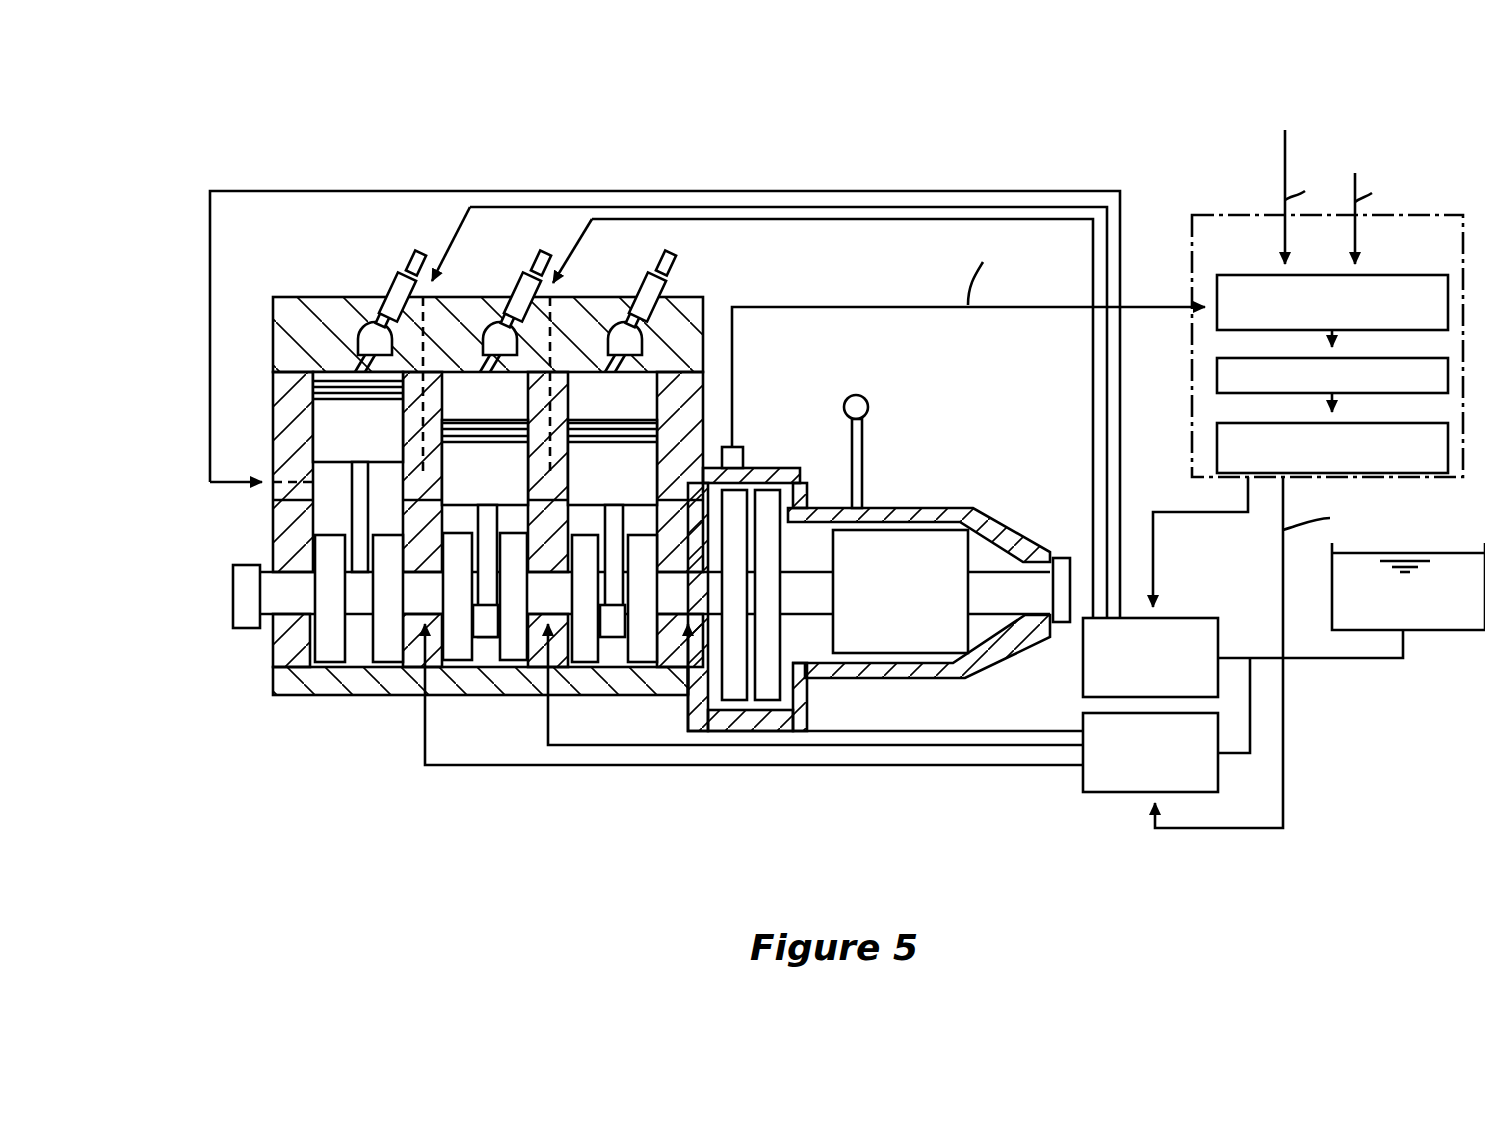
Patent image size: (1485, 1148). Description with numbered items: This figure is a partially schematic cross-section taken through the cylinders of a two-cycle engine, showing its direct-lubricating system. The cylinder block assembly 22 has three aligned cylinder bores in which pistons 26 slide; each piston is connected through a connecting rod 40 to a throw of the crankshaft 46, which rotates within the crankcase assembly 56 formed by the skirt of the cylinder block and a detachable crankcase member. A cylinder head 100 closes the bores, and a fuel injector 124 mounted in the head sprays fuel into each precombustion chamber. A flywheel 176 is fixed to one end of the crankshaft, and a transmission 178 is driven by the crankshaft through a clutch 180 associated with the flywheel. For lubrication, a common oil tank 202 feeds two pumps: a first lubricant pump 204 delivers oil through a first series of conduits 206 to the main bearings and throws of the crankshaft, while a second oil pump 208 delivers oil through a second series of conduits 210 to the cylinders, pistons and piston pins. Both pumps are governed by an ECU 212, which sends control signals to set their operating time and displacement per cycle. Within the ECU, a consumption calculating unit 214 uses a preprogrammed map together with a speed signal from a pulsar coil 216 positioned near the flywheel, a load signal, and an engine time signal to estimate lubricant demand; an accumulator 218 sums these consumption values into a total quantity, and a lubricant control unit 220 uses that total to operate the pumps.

The cylinder block assembly 22 is at (283, 420).
The pistons 26 is at (283, 452).
The connecting rods 40 is at (360, 557).
The crankshaft 46 is at (287, 602).
The crankcase assembly 56 is at (285, 538).
The cylinder head 100 is at (283, 347).
The fuel injector 124 is at (642, 285).
The flywheel 176 is at (752, 495).
The transmission 178 is at (893, 633).
The clutch 180 is at (808, 505).
The oil tank 202 is at (1420, 632).
The first lubricant pump 204 is at (1083, 780).
The first series of conduits 206 is at (862, 733).
The second oil pump 208 is at (1083, 668).
The second series of conduits 210 is at (1120, 455).
The ECU 212 is at (1226, 205).
The consumption calculating unit 214 is at (1243, 282).
The pulsar coil 216 is at (733, 458).
The accumulator 218 is at (1215, 368).
The lubricant control unit 220 is at (1215, 440).